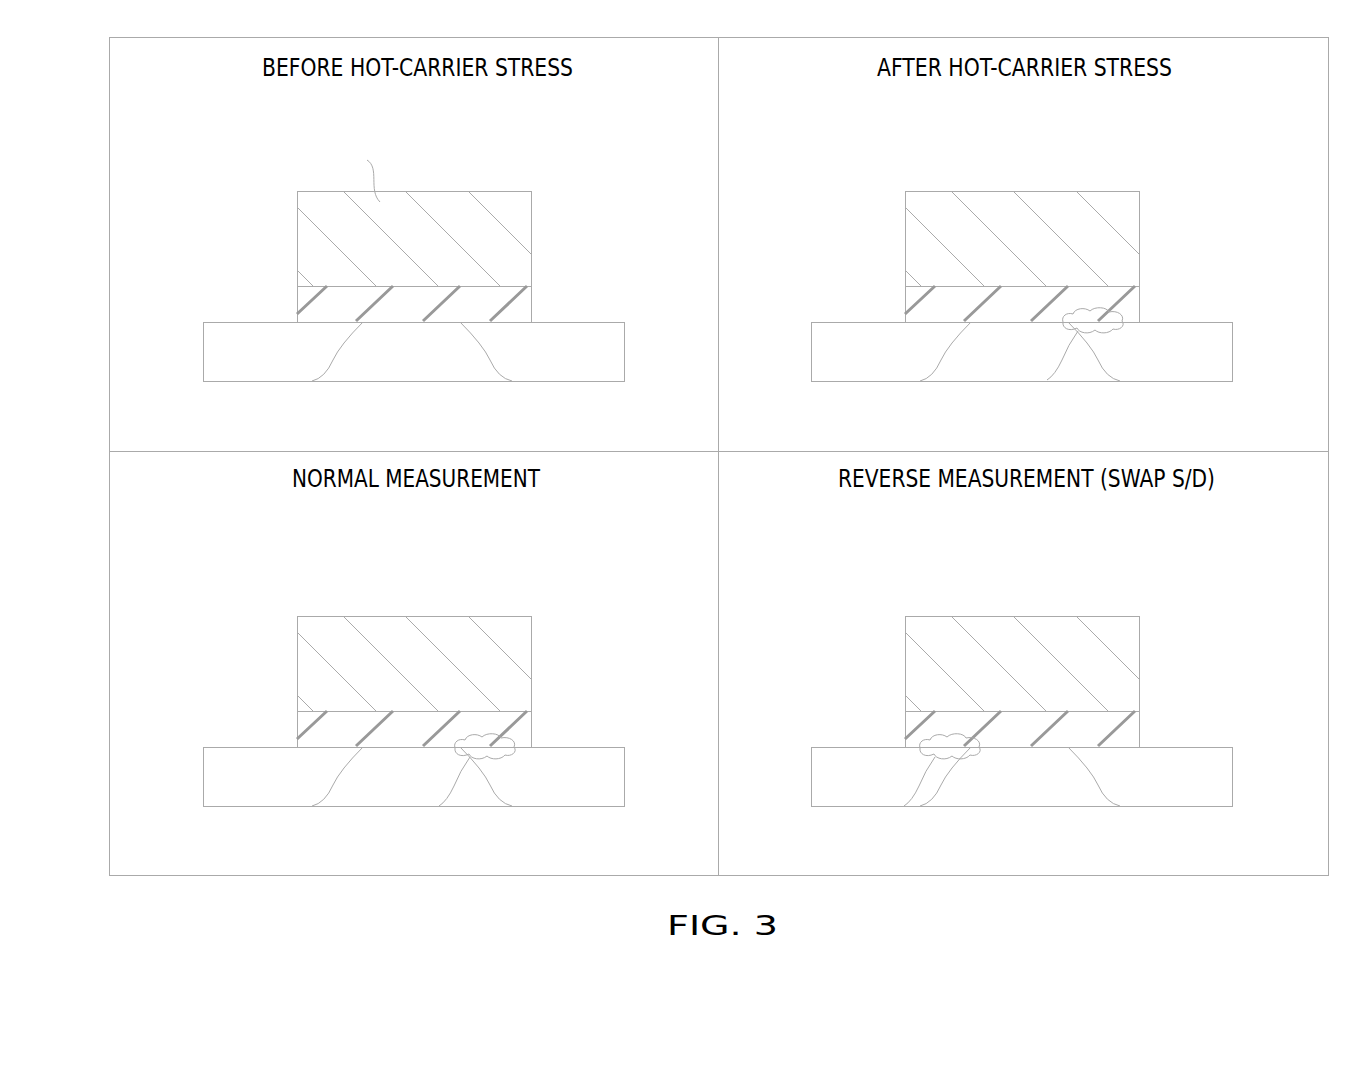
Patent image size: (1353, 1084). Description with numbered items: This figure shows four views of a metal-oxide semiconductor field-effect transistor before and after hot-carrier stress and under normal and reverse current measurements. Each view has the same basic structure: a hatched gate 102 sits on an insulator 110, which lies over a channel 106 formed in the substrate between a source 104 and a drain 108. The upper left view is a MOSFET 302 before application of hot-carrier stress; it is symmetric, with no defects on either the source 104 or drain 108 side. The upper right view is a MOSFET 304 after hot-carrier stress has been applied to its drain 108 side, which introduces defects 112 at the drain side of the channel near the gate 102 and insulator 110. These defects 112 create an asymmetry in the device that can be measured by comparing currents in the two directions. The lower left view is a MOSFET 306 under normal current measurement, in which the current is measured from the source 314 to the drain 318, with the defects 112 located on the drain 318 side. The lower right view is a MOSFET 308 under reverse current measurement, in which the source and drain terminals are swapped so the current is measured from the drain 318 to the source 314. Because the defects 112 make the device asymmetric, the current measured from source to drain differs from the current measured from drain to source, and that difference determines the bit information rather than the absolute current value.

The gate 102 is at (380, 202).
The source 104 is at (210, 353).
The channel 106 is at (417, 372).
The drain 108 is at (617, 351).
The insulator 110 is at (522, 302).
The defects 112 is at (440, 378).
The MOSFET 302 is at (468, 150).
The MOSFET 304 is at (1094, 125).
The MOSFET 306 is at (486, 550).
The MOSFET 308 is at (1094, 550).
The source 314 is at (723, 776).
The drain 318 is at (715, 776).